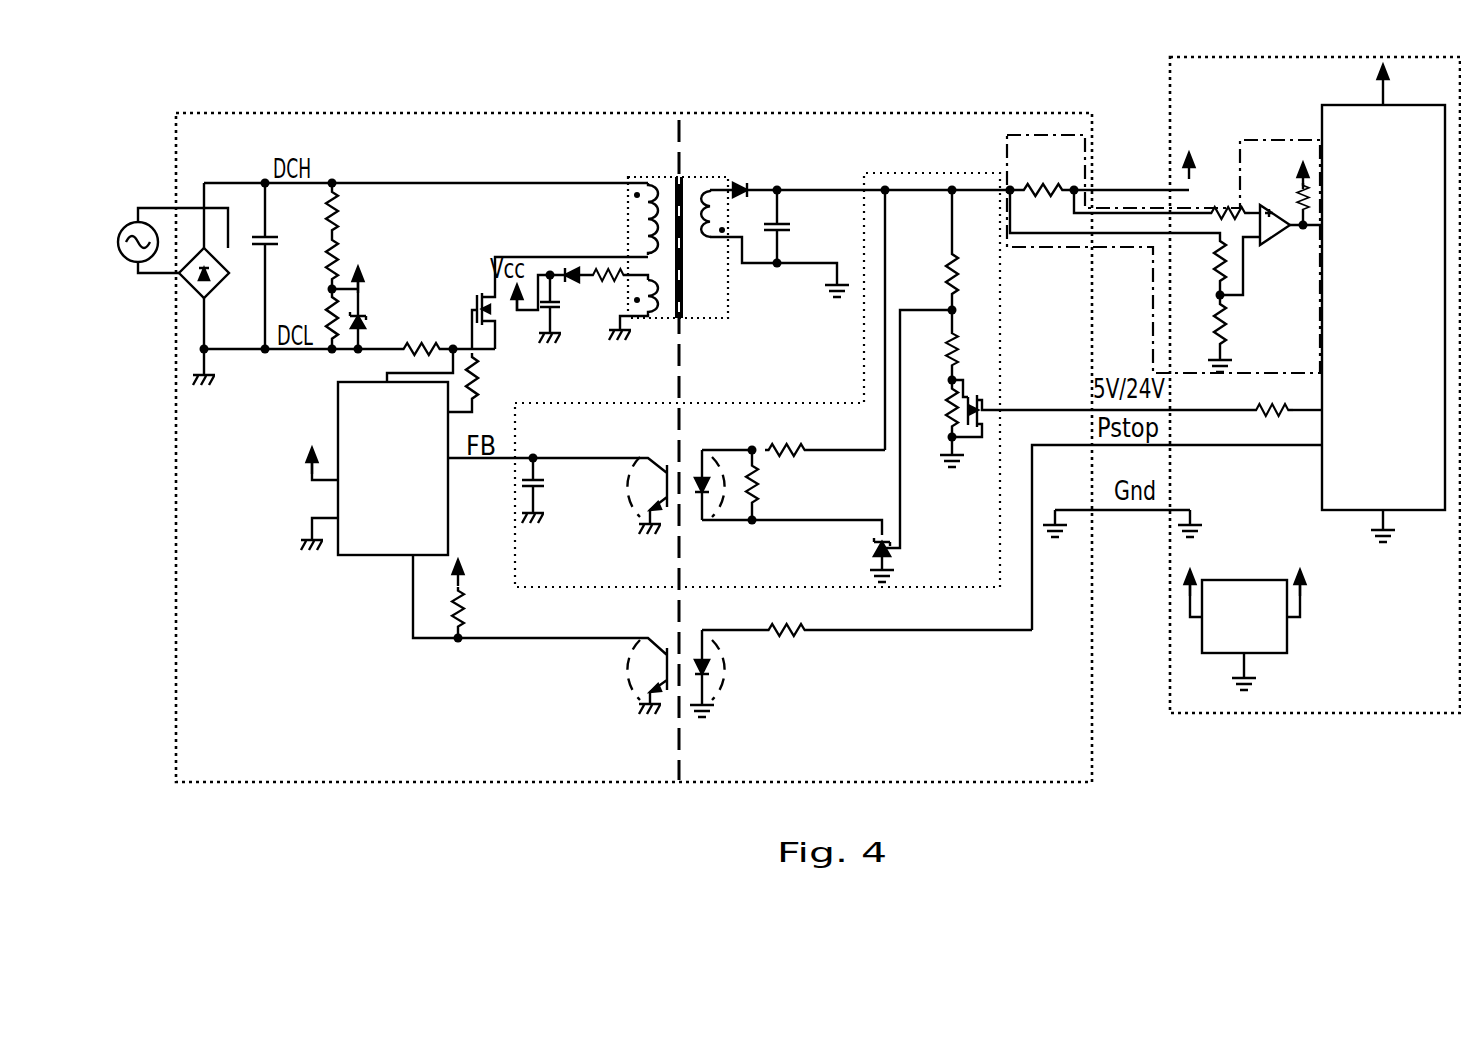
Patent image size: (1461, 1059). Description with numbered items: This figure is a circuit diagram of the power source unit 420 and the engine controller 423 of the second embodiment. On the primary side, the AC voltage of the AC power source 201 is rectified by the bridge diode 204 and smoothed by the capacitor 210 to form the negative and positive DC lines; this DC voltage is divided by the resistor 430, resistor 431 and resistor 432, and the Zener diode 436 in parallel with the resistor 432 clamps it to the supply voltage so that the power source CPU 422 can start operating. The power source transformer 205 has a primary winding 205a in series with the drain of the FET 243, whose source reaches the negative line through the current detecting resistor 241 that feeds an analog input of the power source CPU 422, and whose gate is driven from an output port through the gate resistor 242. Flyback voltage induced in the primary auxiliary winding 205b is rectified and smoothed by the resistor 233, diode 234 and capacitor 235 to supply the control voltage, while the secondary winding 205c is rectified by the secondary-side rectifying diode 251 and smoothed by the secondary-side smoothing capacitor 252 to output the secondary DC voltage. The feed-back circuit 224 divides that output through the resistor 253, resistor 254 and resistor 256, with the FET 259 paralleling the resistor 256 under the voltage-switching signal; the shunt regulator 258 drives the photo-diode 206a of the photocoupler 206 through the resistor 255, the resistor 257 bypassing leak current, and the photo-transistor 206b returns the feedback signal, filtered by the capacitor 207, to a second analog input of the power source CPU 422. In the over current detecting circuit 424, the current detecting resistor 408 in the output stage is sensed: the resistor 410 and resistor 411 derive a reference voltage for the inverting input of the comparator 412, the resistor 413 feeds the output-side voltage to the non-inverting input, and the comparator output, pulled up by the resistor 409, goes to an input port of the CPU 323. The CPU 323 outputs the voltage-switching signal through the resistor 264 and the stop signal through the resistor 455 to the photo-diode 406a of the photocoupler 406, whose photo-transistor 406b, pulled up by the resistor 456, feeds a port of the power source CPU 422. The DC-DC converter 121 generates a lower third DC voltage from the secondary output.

The AC power source 201 is at (140, 264).
The bridge diode 204 is at (232, 284).
The power source transformer 205 is at (648, 177).
The primary winding 205a is at (631, 207).
The primary auxiliary winding 205b is at (638, 309).
The secondary winding 205c is at (706, 186).
The photocoupler 206 is at (600, 477).
The photo-diode 206a is at (702, 470).
The photo-transistor 206b is at (661, 470).
The capacitor 207 is at (537, 482).
The capacitor 210 is at (262, 224).
The feed-back circuit 224 is at (514, 570).
The resistor 233 is at (614, 269).
The diode 234 is at (570, 267).
The capacitor 235 is at (545, 311).
The current detecting resistor 241 is at (426, 345).
The gate resistor 242 is at (480, 386).
The field-effect transistor 243 is at (484, 292).
The secondary-side rectifying diode 251 is at (740, 200).
The secondary-side smoothing capacitor 252 is at (786, 216).
The resistor 253 is at (947, 286).
The resistor 254 is at (948, 360).
The resistor 255 is at (786, 442).
The resistor 256 is at (948, 424).
The resistor 257 is at (759, 474).
The shunt regulator 258 is at (870, 546).
The FET 259 is at (970, 390).
The resistor 264 is at (1252, 406).
The CPU 323 is at (1357, 520).
The photocoupler 406 is at (611, 670).
The photo-diode 406a is at (702, 643).
The photo-transistor 406b is at (661, 643).
The current detecting resistor 408 is at (1042, 186).
The resistor 409 is at (1298, 195).
The resistor 410 is at (1217, 270).
The resistor 411 is at (1218, 330).
The comparator 412 is at (1280, 248).
The resistor 413 is at (1212, 216).
The power source unit 420 is at (160, 486).
The power source CPU 422 is at (354, 559).
The engine controller 423 is at (1283, 716).
The over current detecting circuit 424 is at (1059, 248).
The resistor 430 is at (330, 206).
The resistor 431 is at (332, 258).
The resistor 432 is at (328, 318).
The Zener diode 436 is at (362, 317).
The resistor 455 is at (786, 622).
The resistor 456 is at (452, 622).
The DC-DC converter 121 is at (1287, 653).